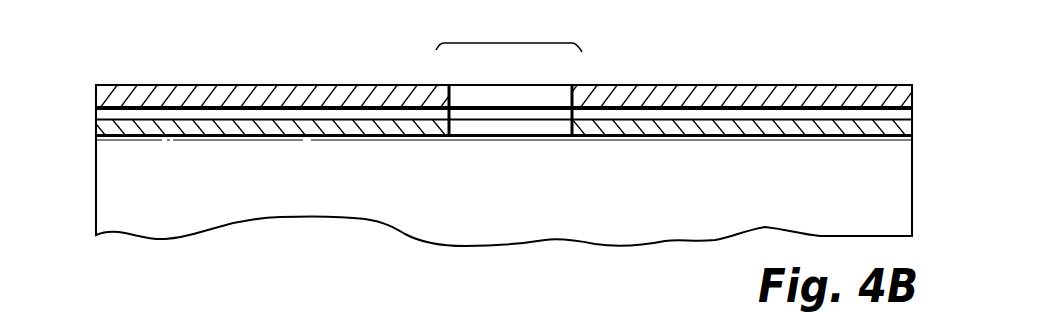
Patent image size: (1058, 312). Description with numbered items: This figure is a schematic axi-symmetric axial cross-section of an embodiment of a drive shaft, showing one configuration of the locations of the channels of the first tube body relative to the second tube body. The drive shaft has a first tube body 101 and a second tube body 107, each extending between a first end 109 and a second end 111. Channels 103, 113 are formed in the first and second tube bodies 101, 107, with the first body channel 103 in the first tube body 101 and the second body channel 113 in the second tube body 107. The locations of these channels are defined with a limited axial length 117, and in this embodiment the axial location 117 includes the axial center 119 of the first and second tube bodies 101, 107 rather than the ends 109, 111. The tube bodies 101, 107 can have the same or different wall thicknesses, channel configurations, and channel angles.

The first tube body 101 is at (197, 95).
The first body channel 103 is at (500, 96).
The second tube body 107 is at (212, 138).
The end of tube bodies 109 is at (77, 102).
The end of tube bodies 111 is at (926, 101).
The second body channel 113 is at (533, 126).
The axial location 117 is at (500, 42).
The axial center 119 is at (464, 158).